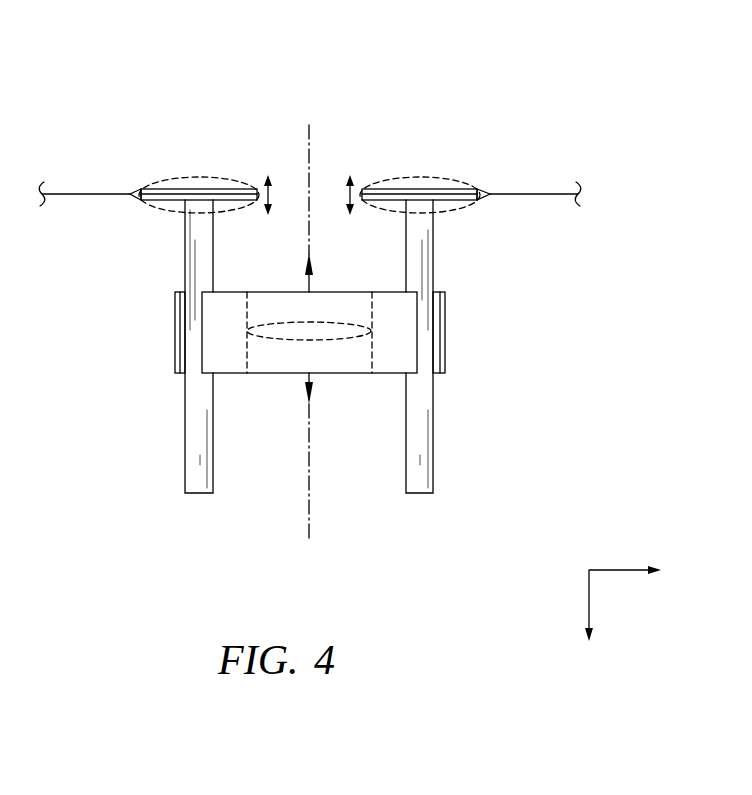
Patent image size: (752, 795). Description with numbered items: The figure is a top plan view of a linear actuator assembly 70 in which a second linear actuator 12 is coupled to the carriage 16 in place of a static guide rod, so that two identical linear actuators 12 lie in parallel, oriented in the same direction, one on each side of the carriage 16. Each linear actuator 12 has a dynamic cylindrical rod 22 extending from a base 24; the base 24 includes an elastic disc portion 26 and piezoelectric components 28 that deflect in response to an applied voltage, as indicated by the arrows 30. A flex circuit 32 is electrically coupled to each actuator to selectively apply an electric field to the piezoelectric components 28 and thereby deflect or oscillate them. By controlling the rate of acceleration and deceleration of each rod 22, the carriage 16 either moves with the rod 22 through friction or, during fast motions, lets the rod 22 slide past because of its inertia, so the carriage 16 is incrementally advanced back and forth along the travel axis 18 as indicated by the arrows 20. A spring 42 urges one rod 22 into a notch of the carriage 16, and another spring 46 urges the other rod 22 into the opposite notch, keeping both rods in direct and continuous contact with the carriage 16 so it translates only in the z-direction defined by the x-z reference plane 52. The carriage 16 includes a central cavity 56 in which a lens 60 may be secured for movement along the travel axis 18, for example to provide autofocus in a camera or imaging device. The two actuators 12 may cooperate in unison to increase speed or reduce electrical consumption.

The linear actuator 12 is at (132, 247).
The carriage 16 is at (232, 353).
The travel axis 18 is at (306, 530).
The arrows indicating carriage movement 20 is at (306, 275).
The dynamic cylindrical rod 22 is at (195, 403).
The base 24 is at (177, 150).
The elastic disc portion 26 is at (247, 189).
The piezoelectric components 28 is at (228, 189).
The arrows indicating deflection 30 is at (271, 190).
The flex circuit 32 is at (88, 190).
The spring 42 is at (174, 330).
The spring 46 is at (447, 330).
The x-z reference plane 52 is at (589, 607).
The central cavity 56 is at (366, 412).
The lens 60 is at (277, 340).
The linear actuator assembly 70 is at (527, 42).